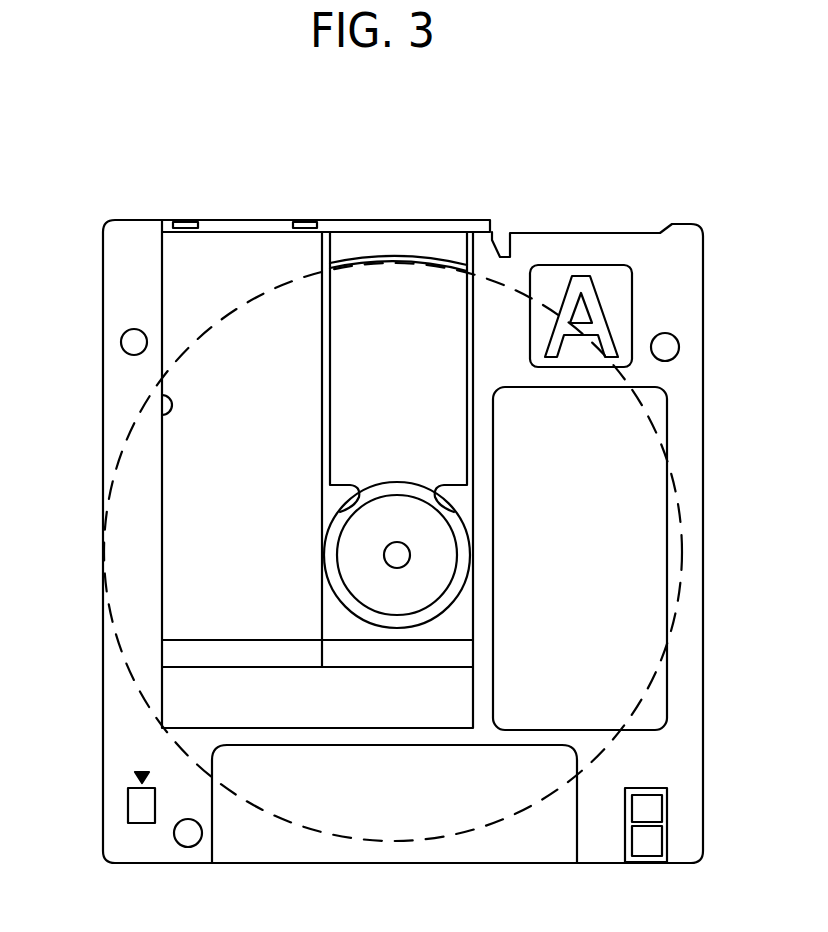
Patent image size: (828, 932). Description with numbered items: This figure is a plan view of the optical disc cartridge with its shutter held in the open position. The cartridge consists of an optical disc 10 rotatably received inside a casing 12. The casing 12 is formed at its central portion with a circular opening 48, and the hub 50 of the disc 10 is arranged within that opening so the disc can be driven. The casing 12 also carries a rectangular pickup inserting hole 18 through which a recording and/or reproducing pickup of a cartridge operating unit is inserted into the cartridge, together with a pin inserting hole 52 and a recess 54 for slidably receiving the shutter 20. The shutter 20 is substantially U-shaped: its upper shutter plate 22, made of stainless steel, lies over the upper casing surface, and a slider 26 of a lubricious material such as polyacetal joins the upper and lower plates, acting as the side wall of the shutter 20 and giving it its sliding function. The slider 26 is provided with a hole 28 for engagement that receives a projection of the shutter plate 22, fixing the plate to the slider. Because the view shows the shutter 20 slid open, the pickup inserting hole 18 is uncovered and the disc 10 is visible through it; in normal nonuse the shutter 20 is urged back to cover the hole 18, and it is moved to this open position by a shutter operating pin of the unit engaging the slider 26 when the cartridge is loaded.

The optical disc 10 is at (359, 265).
The casing 12 is at (690, 277).
The pickup inserting hole 18 is at (452, 248).
The shutter 20 is at (160, 275).
The upper shutter plate 22 is at (183, 505).
The slider 26 is at (402, 220).
The hole for engagement 28 is at (190, 220).
The circular opening 48 is at (463, 515).
The hub 50 is at (430, 567).
The pin inserting hole 52 is at (121, 343).
The recess 54 is at (161, 412).